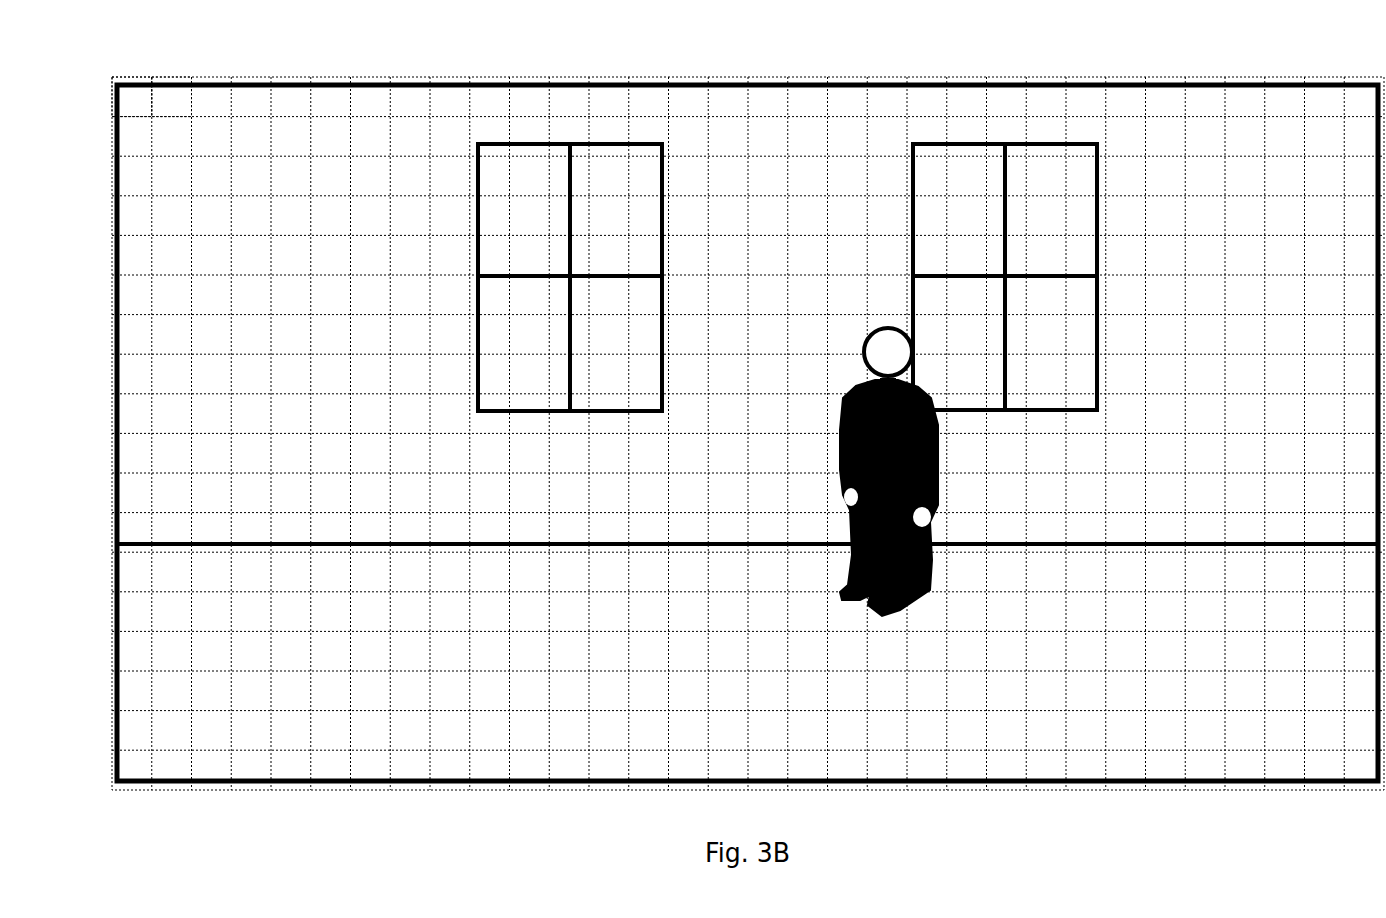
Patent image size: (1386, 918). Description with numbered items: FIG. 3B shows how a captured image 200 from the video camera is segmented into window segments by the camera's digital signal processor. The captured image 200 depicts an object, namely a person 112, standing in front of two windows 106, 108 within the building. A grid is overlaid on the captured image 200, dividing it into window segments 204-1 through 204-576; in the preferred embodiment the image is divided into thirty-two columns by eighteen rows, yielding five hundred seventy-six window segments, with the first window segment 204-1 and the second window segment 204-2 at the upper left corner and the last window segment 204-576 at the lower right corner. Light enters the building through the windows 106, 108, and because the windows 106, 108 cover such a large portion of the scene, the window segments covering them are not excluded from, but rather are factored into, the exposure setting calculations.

The captured image 200 is at (832, 72).
The window segment 204-1 is at (146, 75).
The window segment 204-2 is at (178, 75).
The window segment 204-576 is at (1365, 793).
The window 106 is at (663, 218).
The window 108 is at (1100, 206).
The person 112 is at (873, 327).